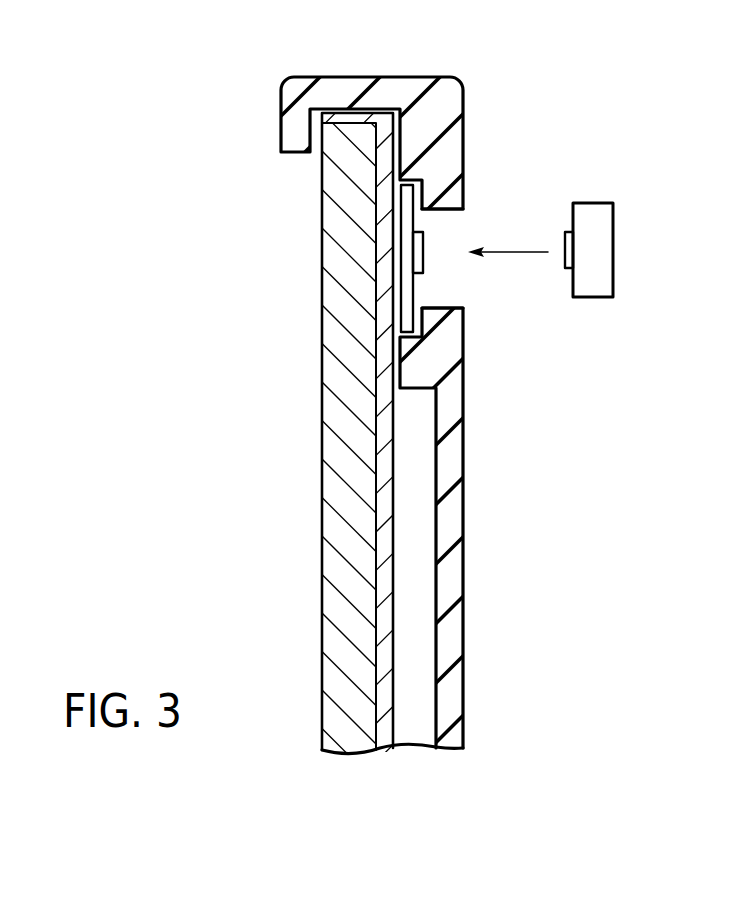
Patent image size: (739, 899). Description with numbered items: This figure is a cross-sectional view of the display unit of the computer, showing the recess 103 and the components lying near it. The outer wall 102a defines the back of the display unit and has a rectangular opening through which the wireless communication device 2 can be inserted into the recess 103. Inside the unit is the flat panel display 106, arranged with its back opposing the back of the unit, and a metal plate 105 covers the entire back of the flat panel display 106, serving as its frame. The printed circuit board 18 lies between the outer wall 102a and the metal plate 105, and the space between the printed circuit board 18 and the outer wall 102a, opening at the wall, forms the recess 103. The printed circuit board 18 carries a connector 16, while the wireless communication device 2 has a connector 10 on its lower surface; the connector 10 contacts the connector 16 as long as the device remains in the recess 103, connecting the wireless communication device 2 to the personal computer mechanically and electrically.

The wireless communication device 2 is at (610, 252).
The connector 10 is at (565, 240).
The connector 16 is at (424, 265).
The printed circuit board 18 is at (405, 323).
The outer wall 102a is at (445, 90).
The recess 103 is at (447, 237).
The metal plate 105 is at (384, 625).
The flat panel display 106 is at (324, 513).